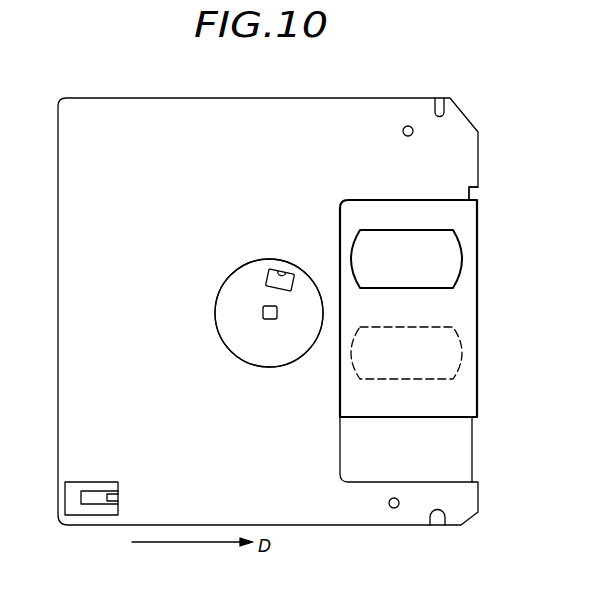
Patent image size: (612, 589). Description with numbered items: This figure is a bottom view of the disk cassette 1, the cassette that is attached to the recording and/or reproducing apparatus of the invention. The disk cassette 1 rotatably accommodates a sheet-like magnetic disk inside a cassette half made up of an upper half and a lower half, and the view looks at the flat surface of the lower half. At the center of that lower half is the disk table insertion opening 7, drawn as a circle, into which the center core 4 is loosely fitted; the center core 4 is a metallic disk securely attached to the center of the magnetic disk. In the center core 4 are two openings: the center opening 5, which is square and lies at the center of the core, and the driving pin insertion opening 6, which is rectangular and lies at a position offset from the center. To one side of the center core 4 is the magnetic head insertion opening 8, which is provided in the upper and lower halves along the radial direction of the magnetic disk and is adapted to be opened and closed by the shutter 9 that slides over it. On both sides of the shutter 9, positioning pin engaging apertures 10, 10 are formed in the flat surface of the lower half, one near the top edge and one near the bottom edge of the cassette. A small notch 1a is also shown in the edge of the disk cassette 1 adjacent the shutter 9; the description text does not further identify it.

The disk cassette 1 is at (75, 137).
The notch 1a is at (473, 191).
The center core 4 is at (247, 338).
The center opening 5 is at (272, 320).
The driving pin insertion opening 6 is at (283, 276).
The disk table insertion opening 7 is at (215, 298).
The magnetic head insertion opening 8 is at (455, 351).
The shutter 9 is at (466, 300).
The positioning pin engaging aperture 10 is at (406, 126).